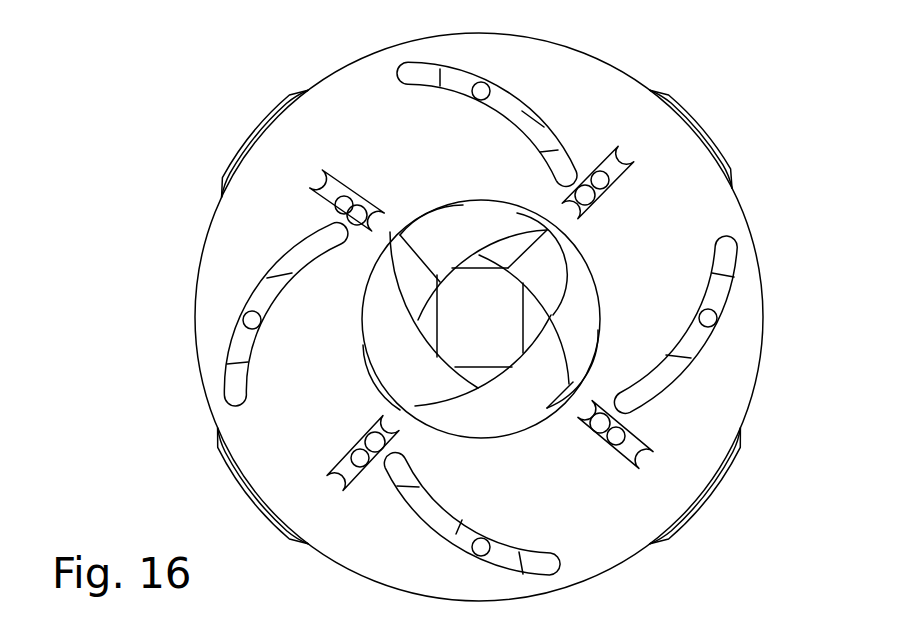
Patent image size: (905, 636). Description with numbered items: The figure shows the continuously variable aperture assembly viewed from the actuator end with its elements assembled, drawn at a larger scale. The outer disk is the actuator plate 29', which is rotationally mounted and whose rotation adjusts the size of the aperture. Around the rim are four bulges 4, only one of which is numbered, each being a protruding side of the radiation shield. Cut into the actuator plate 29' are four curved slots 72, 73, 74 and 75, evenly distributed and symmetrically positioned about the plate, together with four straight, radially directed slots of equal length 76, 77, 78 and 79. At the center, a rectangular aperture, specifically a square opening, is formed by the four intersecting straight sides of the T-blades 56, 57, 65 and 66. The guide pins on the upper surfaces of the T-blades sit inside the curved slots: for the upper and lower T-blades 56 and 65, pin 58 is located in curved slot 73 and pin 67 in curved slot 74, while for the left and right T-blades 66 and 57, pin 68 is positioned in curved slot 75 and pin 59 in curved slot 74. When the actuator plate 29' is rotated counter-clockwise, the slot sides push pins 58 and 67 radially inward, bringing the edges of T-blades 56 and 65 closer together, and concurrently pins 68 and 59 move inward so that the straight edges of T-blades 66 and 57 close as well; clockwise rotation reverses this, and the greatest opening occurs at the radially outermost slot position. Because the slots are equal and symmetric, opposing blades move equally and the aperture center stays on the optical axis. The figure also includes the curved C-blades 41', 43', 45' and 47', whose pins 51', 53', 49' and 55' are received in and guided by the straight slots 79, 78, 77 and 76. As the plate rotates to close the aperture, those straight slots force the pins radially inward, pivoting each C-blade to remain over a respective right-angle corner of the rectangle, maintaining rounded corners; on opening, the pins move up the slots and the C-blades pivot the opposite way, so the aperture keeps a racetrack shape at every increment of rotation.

The bulge 4 is at (240, 150).
The actuator plate 29' is at (455, 317).
The C-blade 41' is at (420, 321).
The C-blade 43' is at (524, 298).
The C-blade 45' is at (473, 262).
The C-blade 47' is at (506, 362).
The pin 49' is at (580, 431).
The pin 51' is at (384, 209).
The pin 53' is at (361, 432).
The pin 55' is at (608, 208).
The T-blade 56 is at (465, 271).
The T-blade 57 is at (523, 323).
The pin 58 is at (494, 92).
The pin 59 is at (699, 318).
The T-blade 65 is at (487, 367).
The T-blade 66 is at (438, 321).
The pin 67 is at (496, 541).
The pin 68 is at (243, 320).
The curved slot 72 is at (541, 123).
The curved slot 73 is at (661, 366).
The curved slot 74 is at (409, 507).
The curved slot 75 is at (298, 252).
The straight slot 76 is at (634, 166).
The straight slot 77 is at (650, 441).
The straight slot 78 is at (336, 468).
The straight slot 79 is at (312, 196).